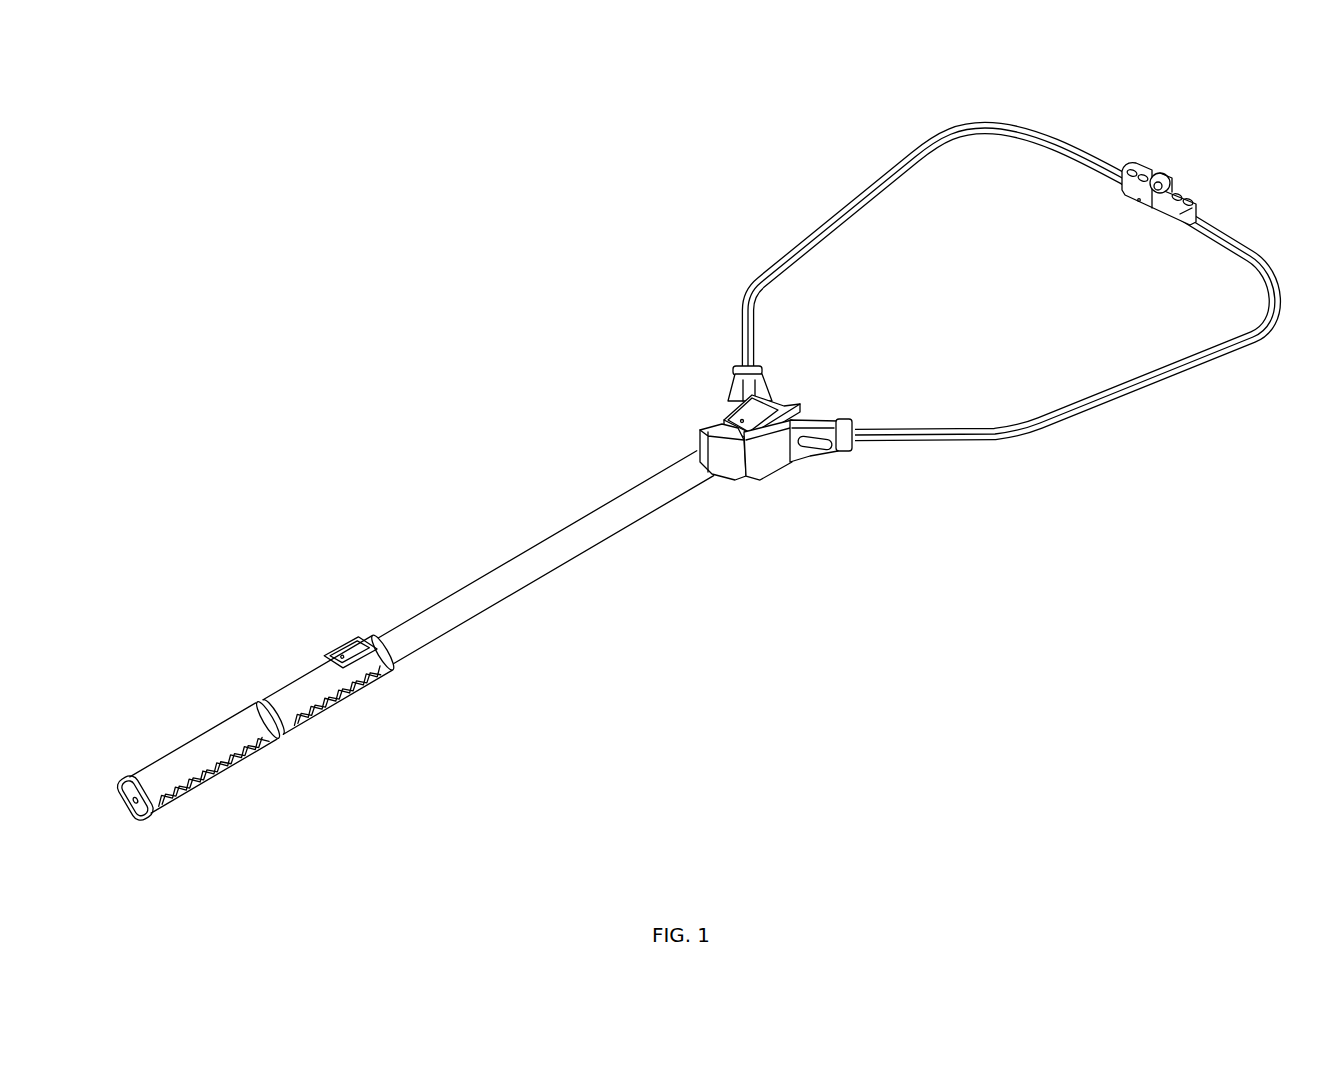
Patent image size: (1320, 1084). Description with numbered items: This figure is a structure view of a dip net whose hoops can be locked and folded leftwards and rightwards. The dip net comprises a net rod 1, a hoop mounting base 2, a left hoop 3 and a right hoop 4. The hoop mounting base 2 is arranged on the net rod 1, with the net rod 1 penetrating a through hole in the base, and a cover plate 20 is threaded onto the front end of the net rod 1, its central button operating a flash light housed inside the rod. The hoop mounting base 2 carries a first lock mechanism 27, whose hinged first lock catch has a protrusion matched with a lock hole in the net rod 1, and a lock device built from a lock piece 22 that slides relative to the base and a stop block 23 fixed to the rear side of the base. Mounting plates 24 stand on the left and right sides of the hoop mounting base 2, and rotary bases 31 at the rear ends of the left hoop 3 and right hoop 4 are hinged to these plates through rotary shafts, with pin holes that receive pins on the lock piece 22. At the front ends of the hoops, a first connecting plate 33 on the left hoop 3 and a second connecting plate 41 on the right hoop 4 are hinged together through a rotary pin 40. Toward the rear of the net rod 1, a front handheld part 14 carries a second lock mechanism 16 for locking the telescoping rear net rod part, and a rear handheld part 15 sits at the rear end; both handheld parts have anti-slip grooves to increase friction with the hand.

The net rod 1 is at (420, 633).
The hoop mounting base 2 is at (760, 474).
The left hoop 3 is at (838, 205).
The right hoop 4 is at (1038, 427).
The front handheld part 14 is at (302, 693).
The rear handheld part 15 is at (210, 757).
The second lock mechanism 16 is at (348, 645).
The cover plate 20 is at (786, 404).
The lock piece 22 is at (735, 412).
The stop block 23 is at (698, 440).
The mounting plate 24 is at (742, 392).
The first lock mechanism 27 is at (764, 398).
The rotary base 31 is at (815, 440).
The first connecting plate 33 is at (1140, 170).
The rotary pin 40 is at (1162, 180).
The second connecting plate 41 is at (1190, 197).